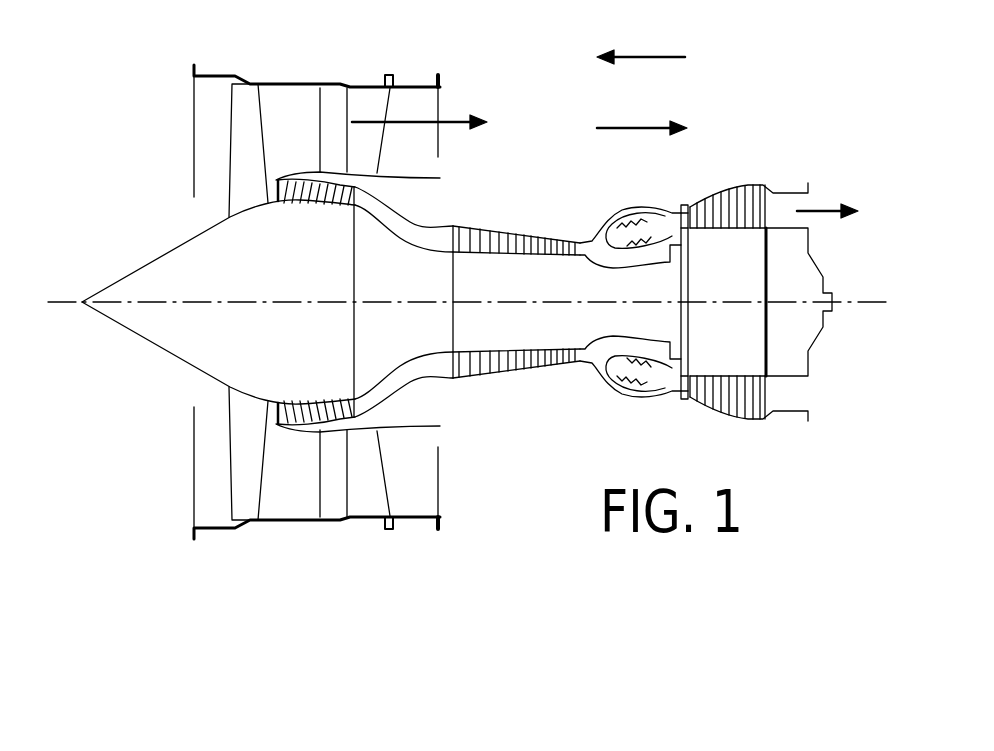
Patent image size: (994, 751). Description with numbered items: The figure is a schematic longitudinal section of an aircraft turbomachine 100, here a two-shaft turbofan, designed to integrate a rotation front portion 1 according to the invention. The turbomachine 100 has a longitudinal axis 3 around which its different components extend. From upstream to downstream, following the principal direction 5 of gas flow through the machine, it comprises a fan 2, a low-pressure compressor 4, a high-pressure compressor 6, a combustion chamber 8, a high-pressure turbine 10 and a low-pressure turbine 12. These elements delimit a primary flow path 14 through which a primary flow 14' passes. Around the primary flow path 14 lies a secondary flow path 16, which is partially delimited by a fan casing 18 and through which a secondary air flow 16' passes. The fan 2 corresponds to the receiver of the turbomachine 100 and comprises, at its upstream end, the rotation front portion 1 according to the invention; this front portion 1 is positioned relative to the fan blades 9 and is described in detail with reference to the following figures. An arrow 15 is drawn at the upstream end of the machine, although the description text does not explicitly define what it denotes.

The nose cone / spinner 1 is at (141, 350).
The fan blade 2 is at (244, 98).
The axis of rotation 3 is at (878, 303).
The low-pressure compressor 4 is at (296, 201).
The primary air flow 5 is at (637, 127).
The high-pressure compressor 6 is at (508, 233).
The combustion chamber 8 is at (660, 218).
The fan 9 is at (247, 450).
The high-pressure turbine 10 is at (690, 205).
The low-pressure turbine 12 is at (745, 187).
The primary flow duct 14 is at (425, 291).
The primary flow outlet 14' is at (832, 185).
The incoming air flow 15 is at (648, 57).
The secondary flow duct 16 is at (371, 302).
The secondary air flow 16' is at (423, 96).
The nacelle 18 is at (293, 77).
The turbomachine 100 is at (533, 75).